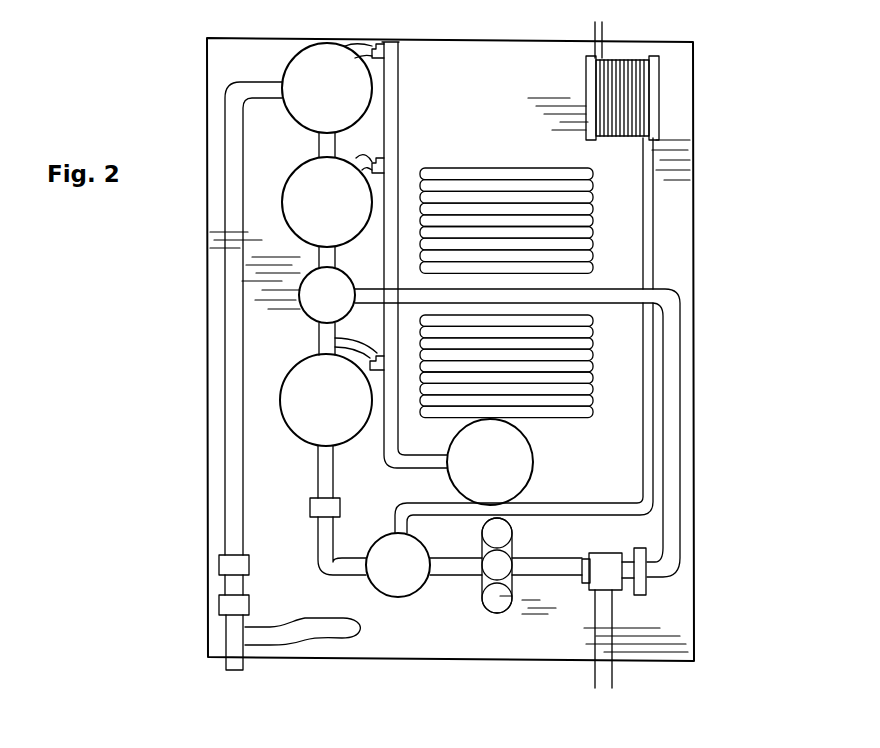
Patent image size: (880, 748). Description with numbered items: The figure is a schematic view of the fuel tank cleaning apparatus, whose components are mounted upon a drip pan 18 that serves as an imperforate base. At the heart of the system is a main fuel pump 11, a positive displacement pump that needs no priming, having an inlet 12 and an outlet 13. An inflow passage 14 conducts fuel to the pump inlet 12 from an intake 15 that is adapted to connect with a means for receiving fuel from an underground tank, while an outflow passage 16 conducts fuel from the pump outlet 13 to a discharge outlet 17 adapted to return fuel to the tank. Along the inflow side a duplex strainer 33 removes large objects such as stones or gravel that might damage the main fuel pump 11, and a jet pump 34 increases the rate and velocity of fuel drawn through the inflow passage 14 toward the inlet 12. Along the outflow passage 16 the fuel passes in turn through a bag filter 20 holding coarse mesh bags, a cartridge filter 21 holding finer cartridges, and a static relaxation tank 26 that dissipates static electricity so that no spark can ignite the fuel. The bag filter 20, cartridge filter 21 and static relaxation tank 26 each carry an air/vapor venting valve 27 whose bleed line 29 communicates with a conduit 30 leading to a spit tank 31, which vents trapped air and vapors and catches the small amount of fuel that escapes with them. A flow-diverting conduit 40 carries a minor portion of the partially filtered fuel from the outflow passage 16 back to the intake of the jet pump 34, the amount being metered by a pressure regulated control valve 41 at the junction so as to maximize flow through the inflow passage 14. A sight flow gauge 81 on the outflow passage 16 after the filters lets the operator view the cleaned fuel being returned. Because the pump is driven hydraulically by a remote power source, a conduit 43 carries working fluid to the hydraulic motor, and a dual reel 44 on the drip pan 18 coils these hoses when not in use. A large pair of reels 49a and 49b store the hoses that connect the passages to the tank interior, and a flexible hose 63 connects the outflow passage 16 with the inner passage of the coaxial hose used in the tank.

The main fuel pump 11 is at (406, 608).
The inlet 12 is at (457, 575).
The outlet 13 is at (357, 575).
The inflow passage 14 is at (557, 590).
The intake 15 is at (608, 689).
The outflow passage 16 is at (225, 405).
The discharge outlet 17 is at (233, 672).
The drip pan 18 is at (208, 545).
The bag filter 20 is at (311, 414).
The cartridge filter 21 is at (312, 216).
The static relaxation tank 26 is at (312, 102).
The air/vapor venting valve 27 is at (367, 43).
The bleed line 29 is at (380, 42).
The conduit 30 is at (390, 90).
The spit tank 31 is at (476, 476).
The duplex strainer 33 is at (495, 578).
The jet pump 34 is at (612, 546).
The flow-diverting conduit 40 is at (680, 311).
The control valve 41 is at (314, 308).
The conduit 43 is at (605, 32).
The dual reel 44 is at (658, 101).
The reel 49a is at (498, 167).
The reel 49b is at (562, 418).
The flexible hose 63 is at (322, 622).
The sight flow gauge 81 is at (230, 605).